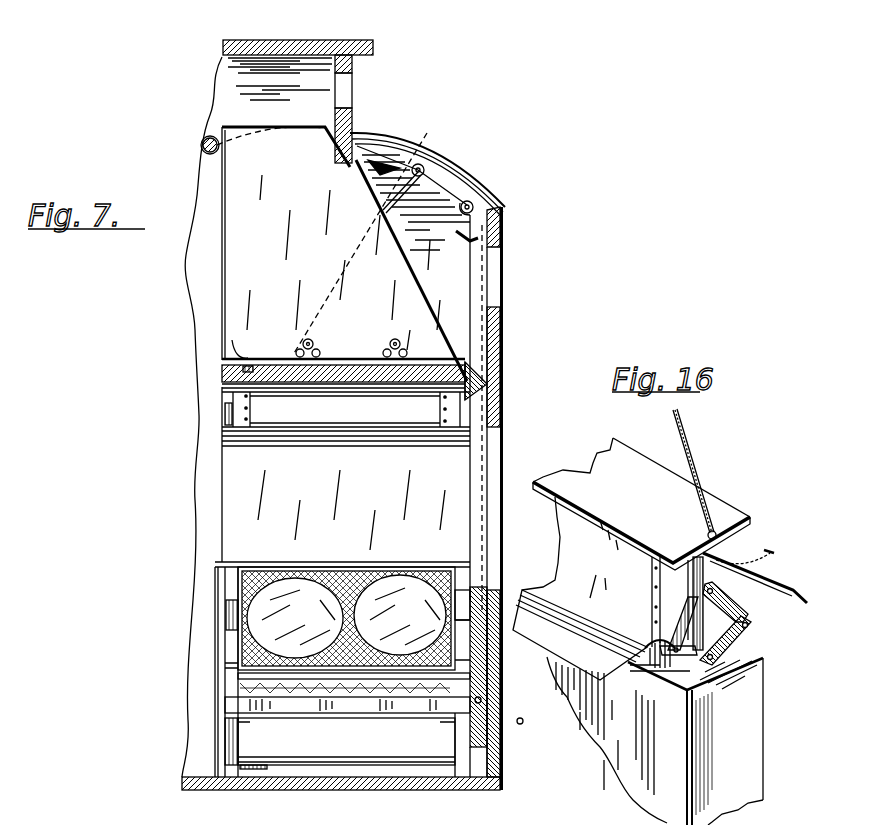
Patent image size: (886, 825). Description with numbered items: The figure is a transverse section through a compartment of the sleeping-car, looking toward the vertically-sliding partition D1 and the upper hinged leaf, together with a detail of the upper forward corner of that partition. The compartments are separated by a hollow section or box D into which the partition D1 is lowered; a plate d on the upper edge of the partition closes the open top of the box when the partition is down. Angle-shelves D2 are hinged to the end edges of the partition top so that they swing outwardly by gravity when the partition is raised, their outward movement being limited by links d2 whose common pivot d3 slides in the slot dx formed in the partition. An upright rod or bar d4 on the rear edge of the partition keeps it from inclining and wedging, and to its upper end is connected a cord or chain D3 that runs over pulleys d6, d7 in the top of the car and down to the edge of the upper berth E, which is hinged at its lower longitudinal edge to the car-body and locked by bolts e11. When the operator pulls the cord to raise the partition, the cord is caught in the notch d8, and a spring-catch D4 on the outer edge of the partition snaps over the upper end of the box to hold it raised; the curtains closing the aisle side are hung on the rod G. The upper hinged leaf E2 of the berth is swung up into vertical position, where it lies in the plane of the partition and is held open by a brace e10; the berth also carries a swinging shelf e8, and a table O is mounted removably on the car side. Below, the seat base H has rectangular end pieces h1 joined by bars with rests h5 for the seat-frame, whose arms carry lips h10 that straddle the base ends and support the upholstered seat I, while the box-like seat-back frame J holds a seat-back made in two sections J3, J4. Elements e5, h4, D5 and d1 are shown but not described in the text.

In FIG. 7, the rod G is at (201, 146).
In FIG. 7, the upper hinged leaf E2 is at (342, 254).
In FIG. 7, the cord or chain D3 is at (487, 154).
In FIG. 16, the cord or chain D3 is at (724, 475).
In FIG. 7, the pulley d7 is at (420, 162).
In FIG. 7, the pulley d6 is at (474, 201).
In FIG. 7, the upright rod or bar d4 is at (500, 213).
In FIG. 7, the swinging shelf e8 is at (455, 240).
In FIG. 7, the upper berth E is at (222, 378).
In FIG. 7, the brace e10 is at (222, 320).
In FIG. 7, the bolts e11 is at (240, 343).
In FIG. 7, the lid hinge e5 is at (329, 346).
In FIG. 7, the plate d is at (233, 394).
In FIG. 16, the plate d is at (641, 504).
In FIG. 7, the links d2 is at (225, 423).
In FIG. 16, the links d2 is at (659, 635).
In FIG. 7, the vertically-sliding partition D1 is at (346, 474).
In FIG. 16, the vertically-sliding partition D1 is at (628, 583).
In FIG. 7, the angle-shelves D2 is at (345, 411).
In FIG. 16, the angle-shelves D2 is at (755, 593).
In FIG. 7, the spring-catch D4 is at (222, 548).
In FIG. 7, the box-like seat-back frame J is at (346, 605).
In FIG. 7, the seat-back section J4 is at (295, 618).
In FIG. 7, the seat-back section J3 is at (400, 615).
In FIG. 7, the lips h10 is at (228, 672).
In FIG. 7, the table O is at (481, 703).
In FIG. 7, the upholstered seat I is at (346, 741).
In FIG. 7, the base H is at (255, 741).
In FIG. 7, the rests h5 is at (346, 734).
In FIG. 7, the drawer bottom h4 is at (346, 755).
In FIG. 7, the rectangular end pieces h1 is at (225, 745).
In FIG. 16, the notch d8 is at (713, 545).
In FIG. 16, the slot dx is at (684, 603).
In FIG. 16, the slab D5 is at (580, 635).
In FIG. 16, the pivot d3 is at (725, 592).
In FIG. 16, the bracket arm d1 is at (712, 627).
In FIG. 16, the hollow section or box D is at (695, 741).